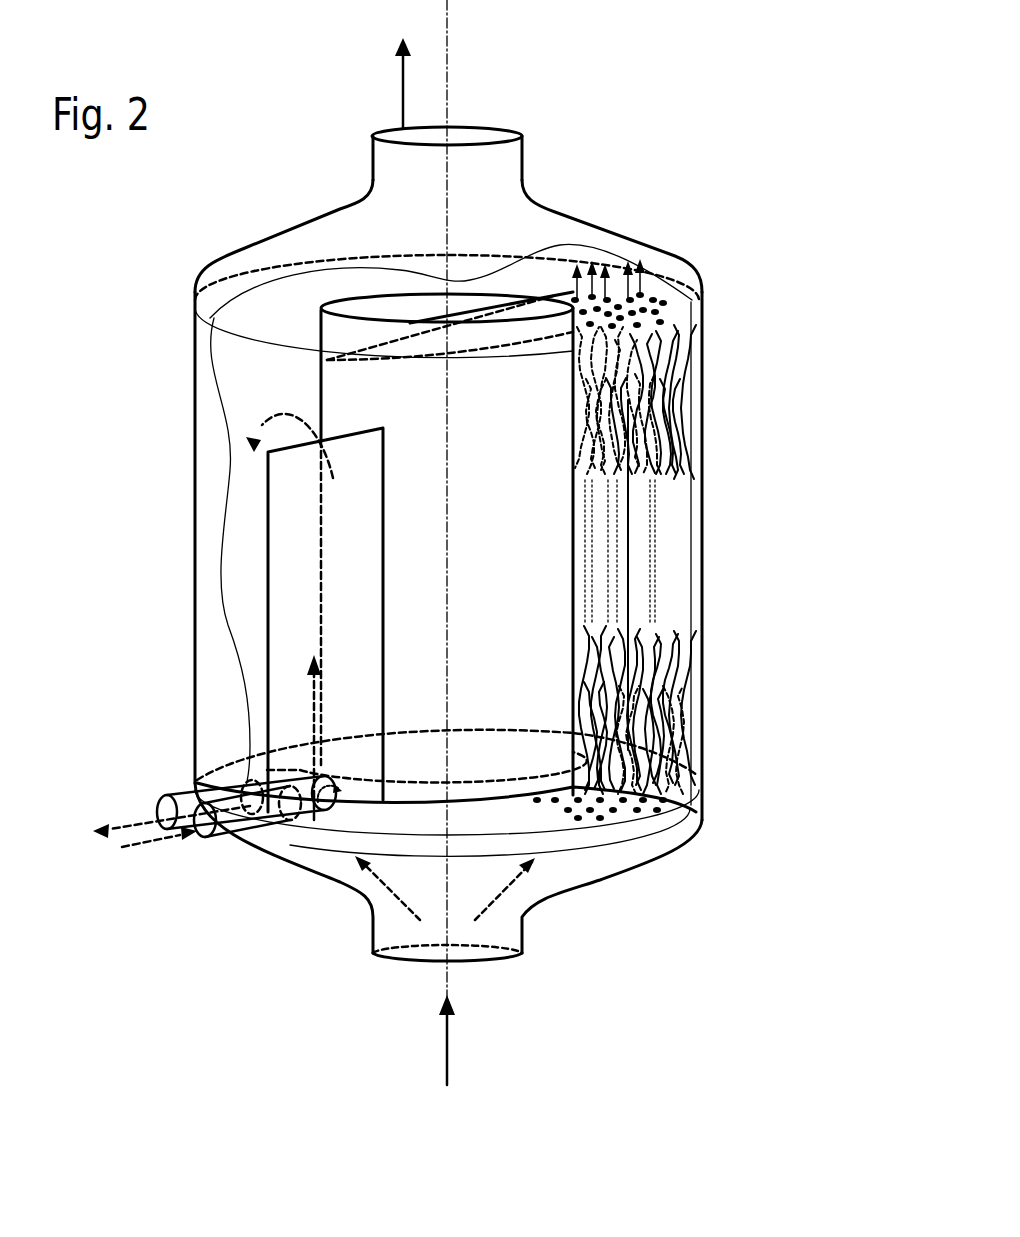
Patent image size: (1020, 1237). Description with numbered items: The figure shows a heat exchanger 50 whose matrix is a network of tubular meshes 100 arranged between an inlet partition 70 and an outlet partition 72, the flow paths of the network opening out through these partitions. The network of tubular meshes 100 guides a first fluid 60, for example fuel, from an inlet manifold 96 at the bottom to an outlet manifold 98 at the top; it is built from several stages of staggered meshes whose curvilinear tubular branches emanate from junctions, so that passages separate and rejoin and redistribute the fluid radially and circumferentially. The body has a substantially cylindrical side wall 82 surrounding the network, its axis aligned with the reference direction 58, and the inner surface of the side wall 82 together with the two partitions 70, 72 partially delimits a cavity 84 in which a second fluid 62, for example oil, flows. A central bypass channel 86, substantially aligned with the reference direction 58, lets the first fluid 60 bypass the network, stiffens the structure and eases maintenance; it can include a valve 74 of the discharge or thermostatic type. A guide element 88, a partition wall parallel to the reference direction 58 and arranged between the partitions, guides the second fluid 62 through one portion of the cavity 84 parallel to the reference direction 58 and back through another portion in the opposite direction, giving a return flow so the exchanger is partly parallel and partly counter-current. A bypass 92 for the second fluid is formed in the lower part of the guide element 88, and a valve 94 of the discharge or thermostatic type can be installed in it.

The heat exchanger 50 is at (790, 215).
The reference direction 58 is at (447, 3).
The first fluid 60 is at (450, 1037).
The second fluid 62 is at (172, 838).
The inlet partition 70 is at (557, 823).
The outlet partition 72 is at (685, 318).
The valve 74 is at (547, 287).
The side wall 82 is at (212, 452).
The cavity 84 is at (258, 378).
The bypass channel 86 is at (323, 305).
The guide element 88 is at (268, 551).
The bypass 92 is at (327, 812).
The valve 94 is at (318, 797).
The inlet manifold 96 is at (373, 910).
The outlet manifold 98 is at (337, 215).
The network of tubular meshes 100 is at (683, 757).